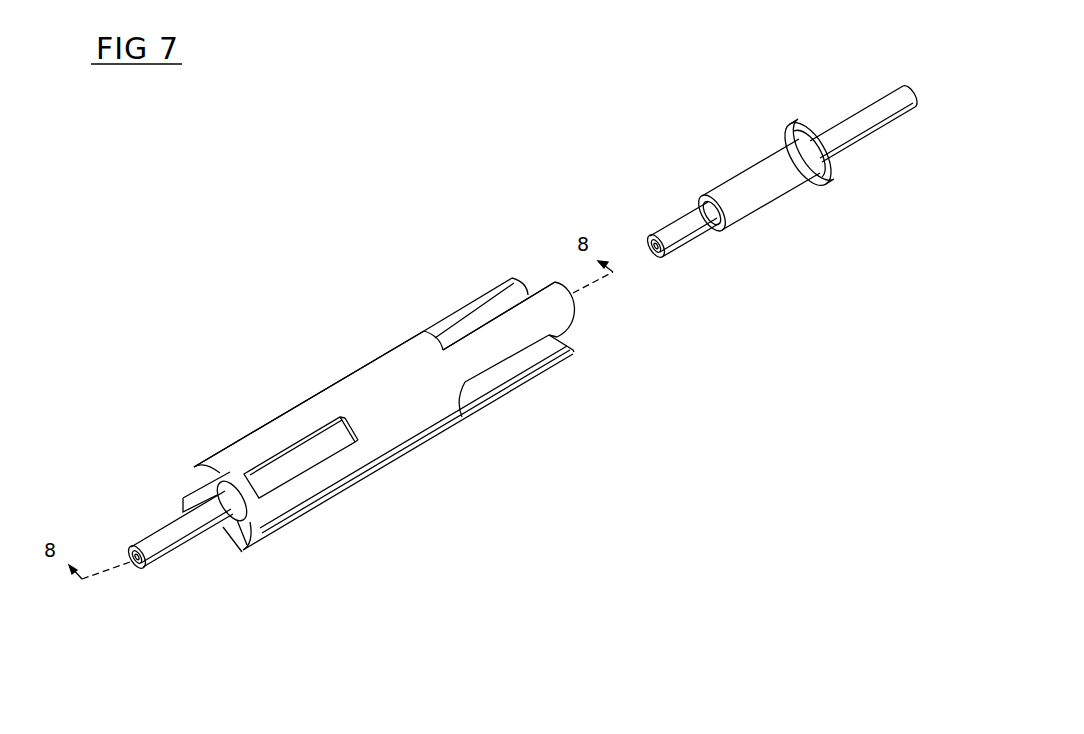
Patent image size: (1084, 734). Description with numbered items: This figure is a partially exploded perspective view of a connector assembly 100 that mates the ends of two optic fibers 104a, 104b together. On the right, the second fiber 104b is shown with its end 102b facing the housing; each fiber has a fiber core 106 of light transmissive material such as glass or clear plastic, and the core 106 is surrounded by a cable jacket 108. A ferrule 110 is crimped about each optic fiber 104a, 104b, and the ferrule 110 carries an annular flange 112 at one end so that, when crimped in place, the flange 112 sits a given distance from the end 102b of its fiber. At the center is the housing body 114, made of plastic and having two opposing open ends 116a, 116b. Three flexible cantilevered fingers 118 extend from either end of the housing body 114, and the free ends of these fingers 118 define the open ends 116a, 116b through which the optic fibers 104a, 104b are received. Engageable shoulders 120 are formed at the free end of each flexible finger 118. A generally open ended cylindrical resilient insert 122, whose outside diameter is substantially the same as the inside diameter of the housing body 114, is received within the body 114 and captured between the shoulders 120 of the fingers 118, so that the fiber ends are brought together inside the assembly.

The connector assembly 100 is at (522, 343).
The end of optic fiber 102b is at (576, 319).
The optic fiber 104a is at (174, 560).
The optic fiber 104b is at (876, 143).
The fiber core 106 is at (132, 568).
The cable jacket 108 is at (888, 107).
The ferrule 110 is at (777, 187).
The annular flange 112 is at (795, 133).
The housing body 114 is at (388, 341).
The open end 116a is at (190, 482).
The open end 116b is at (522, 292).
The flexible cantilevered fingers 118 is at (502, 327).
The engageable shoulders 120 is at (262, 435).
The cylindrical resilient insert 122 is at (333, 437).